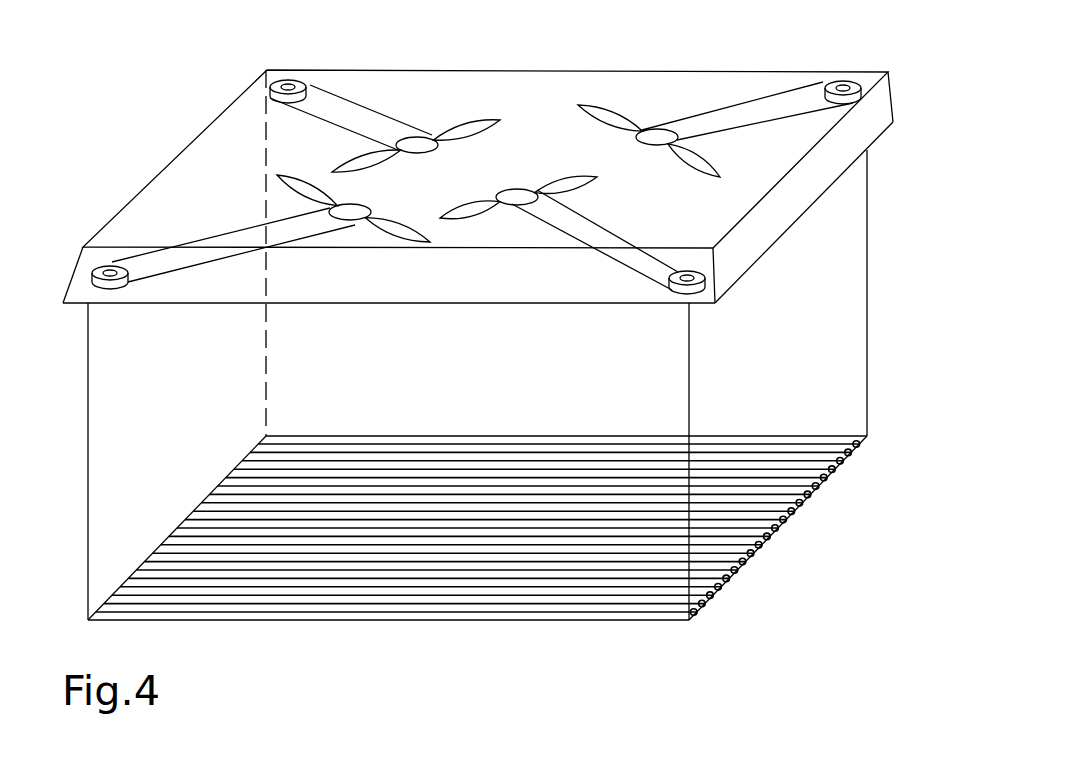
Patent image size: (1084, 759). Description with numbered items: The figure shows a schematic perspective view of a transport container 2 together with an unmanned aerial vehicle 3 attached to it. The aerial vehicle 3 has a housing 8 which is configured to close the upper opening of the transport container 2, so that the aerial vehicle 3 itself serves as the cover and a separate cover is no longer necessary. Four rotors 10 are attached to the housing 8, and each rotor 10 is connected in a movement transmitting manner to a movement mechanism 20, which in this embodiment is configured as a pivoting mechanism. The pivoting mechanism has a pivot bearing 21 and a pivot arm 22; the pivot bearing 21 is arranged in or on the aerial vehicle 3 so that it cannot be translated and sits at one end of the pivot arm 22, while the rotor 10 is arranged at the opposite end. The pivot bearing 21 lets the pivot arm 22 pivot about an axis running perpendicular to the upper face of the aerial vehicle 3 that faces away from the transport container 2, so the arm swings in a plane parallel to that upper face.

The transport container 2 is at (868, 342).
The unmanned aerial vehicle 3 is at (877, 145).
The housing 8 is at (893, 93).
The rotor 10 is at (462, 122).
The movement mechanism 20 is at (476, 155).
The pivot bearing 21 is at (267, 100).
The pivot arm 22 is at (327, 120).